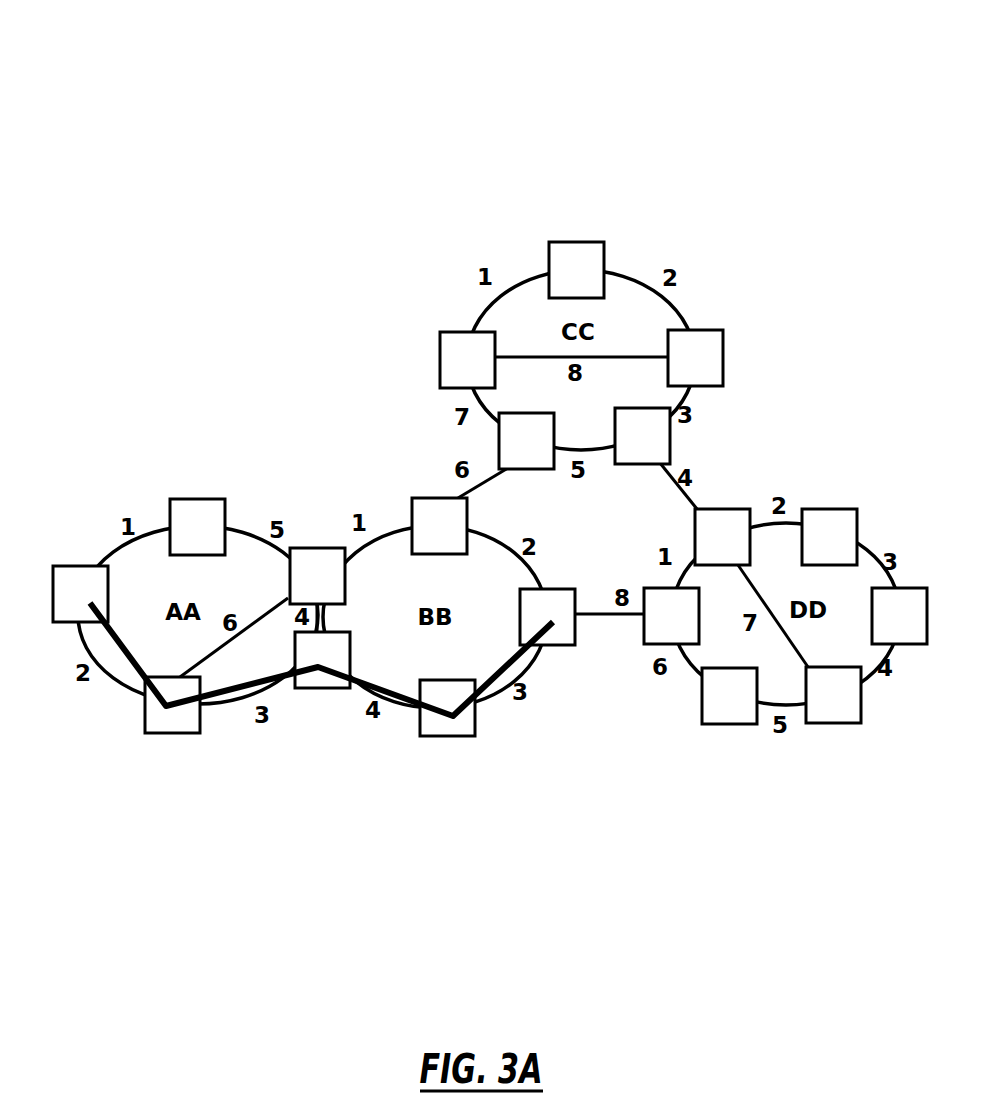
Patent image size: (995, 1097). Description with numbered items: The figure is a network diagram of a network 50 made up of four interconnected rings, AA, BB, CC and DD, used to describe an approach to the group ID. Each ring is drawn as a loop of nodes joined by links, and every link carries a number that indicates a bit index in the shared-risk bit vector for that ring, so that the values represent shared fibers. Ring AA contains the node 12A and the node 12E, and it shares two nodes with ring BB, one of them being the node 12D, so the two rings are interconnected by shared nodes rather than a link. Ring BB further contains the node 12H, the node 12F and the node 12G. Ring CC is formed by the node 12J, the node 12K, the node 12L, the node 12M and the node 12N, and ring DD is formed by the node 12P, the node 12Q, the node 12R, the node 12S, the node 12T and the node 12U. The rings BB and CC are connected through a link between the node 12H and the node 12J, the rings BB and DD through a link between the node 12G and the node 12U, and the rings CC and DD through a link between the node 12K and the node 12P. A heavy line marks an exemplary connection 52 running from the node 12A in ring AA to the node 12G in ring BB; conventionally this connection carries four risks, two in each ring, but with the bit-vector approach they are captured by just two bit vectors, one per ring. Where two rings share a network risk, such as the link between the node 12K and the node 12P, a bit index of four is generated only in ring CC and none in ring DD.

The node 12A is at (61, 607).
The node 12D is at (303, 673).
The node 12E is at (153, 718).
The node 12F is at (428, 721).
The node 12G is at (528, 630).
The node 12H is at (420, 539).
The node 12J is at (507, 454).
The node 12K is at (623, 449).
The node 12L is at (676, 371).
The node 12M is at (557, 283).
The node 12N is at (448, 373).
The node 12P is at (703, 550).
The node 12Q is at (810, 550).
The node 12R is at (880, 629).
The node 12S is at (814, 708).
The node 12T is at (710, 709).
The node 12U is at (652, 629).
The network 50 is at (761, 66).
The connection 52 is at (143, 670).